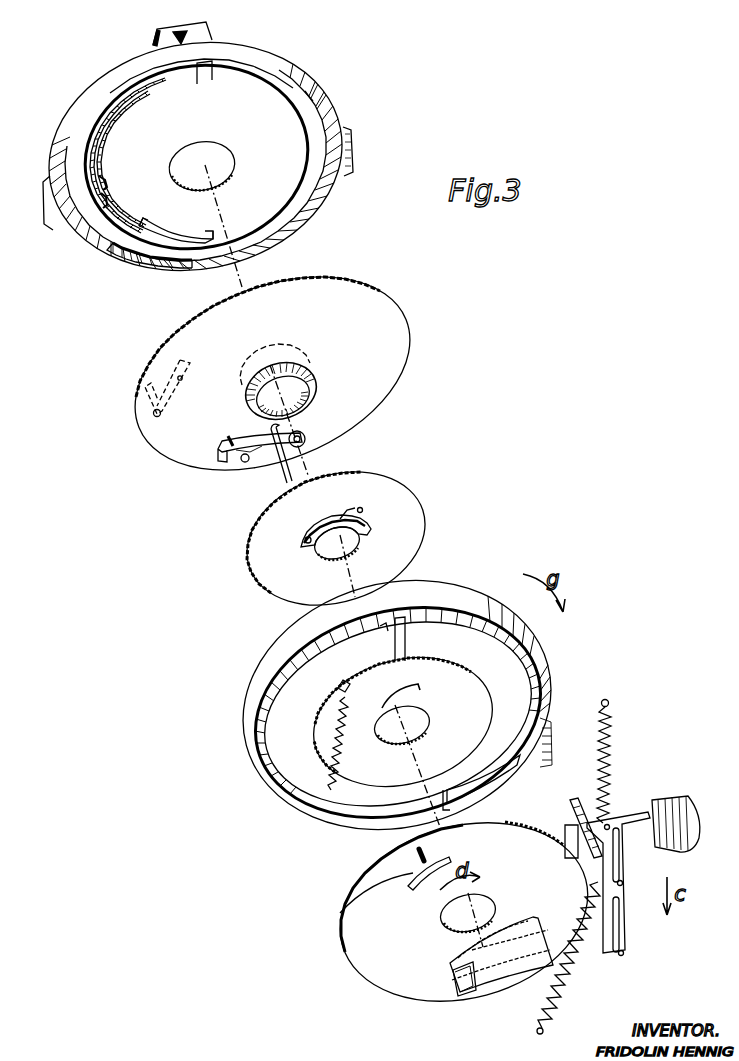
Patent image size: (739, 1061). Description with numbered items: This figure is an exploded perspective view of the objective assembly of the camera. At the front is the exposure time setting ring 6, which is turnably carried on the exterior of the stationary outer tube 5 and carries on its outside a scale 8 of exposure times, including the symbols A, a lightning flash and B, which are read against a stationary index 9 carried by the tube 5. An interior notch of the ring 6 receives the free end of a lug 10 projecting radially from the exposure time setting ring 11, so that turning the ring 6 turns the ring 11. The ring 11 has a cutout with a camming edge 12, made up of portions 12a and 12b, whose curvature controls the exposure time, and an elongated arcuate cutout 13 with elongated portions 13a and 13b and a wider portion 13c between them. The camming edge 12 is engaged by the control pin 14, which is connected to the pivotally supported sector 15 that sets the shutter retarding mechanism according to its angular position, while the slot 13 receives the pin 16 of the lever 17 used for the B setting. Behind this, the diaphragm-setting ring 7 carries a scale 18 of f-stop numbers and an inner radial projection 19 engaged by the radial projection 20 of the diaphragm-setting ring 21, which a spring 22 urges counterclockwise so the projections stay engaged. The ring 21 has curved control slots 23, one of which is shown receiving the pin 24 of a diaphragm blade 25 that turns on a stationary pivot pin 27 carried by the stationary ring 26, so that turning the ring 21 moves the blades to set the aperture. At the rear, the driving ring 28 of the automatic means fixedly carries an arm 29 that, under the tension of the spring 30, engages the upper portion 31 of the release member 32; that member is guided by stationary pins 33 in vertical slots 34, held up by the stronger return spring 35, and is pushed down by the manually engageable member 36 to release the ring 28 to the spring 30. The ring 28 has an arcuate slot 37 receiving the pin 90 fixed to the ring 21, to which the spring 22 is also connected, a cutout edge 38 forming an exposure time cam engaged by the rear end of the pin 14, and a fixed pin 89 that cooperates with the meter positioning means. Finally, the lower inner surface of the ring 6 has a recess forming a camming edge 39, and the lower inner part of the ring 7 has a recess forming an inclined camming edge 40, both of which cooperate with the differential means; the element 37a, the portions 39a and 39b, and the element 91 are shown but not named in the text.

The outer tube 5 is at (212, 31).
The exposure time setting ring 6 is at (123, 77).
The diaphragm-setting ring 7 is at (548, 664).
The scale of exposure times 8 is at (280, 54).
The stationary index 9 is at (172, 33).
The lug 10 is at (197, 67).
The exposure time setting ring 11 is at (300, 165).
The camming edge 12 is at (177, 229).
The portion of camming edge 12a is at (214, 232).
The portion of camming edge 12b is at (152, 224).
The arcuate cutout 13 is at (103, 135).
The elongated portion of slot 13a is at (107, 202).
The elongated portion of slot 13b is at (117, 118).
The wider portion of slot 13c is at (106, 185).
The control pin 14 is at (270, 436).
The sector 15 is at (266, 465).
The pin 16 is at (148, 389).
The lever 17 is at (170, 398).
The scale of f-stop numbers 18 is at (397, 610).
The radial projection 19 is at (383, 626).
The radial projection 20 is at (406, 638).
The diaphragm-setting ring 21 is at (475, 694).
The spring 22 is at (335, 742).
The control slot 23 is at (424, 687).
The pin 24 is at (362, 508).
The diaphragm blade 25 is at (347, 503).
The stationary ring 26 is at (415, 519).
The pivot pin 27 is at (305, 540).
The driving ring 28 is at (352, 955).
The arm 29 is at (574, 818).
The spring 30 is at (575, 965).
The upper portion of release member 31 is at (598, 826).
The release member 32 is at (640, 818).
The stationary pin 33 is at (622, 881).
The vertical slot 34 is at (622, 850).
The return spring 35 is at (608, 757).
The manually engageable member 36 is at (684, 836).
The arcuate slot 37 is at (405, 879).
The cam edge 37a is at (345, 910).
The camming edge 38 is at (485, 985).
The camming edge 39 is at (118, 264).
The stop face 39a is at (182, 262).
The stop edge 39b is at (163, 262).
The inclined camming edge 40 is at (476, 777).
The pin 89 is at (418, 852).
The pin 90 is at (340, 688).
The pawl tip 91 is at (462, 975).